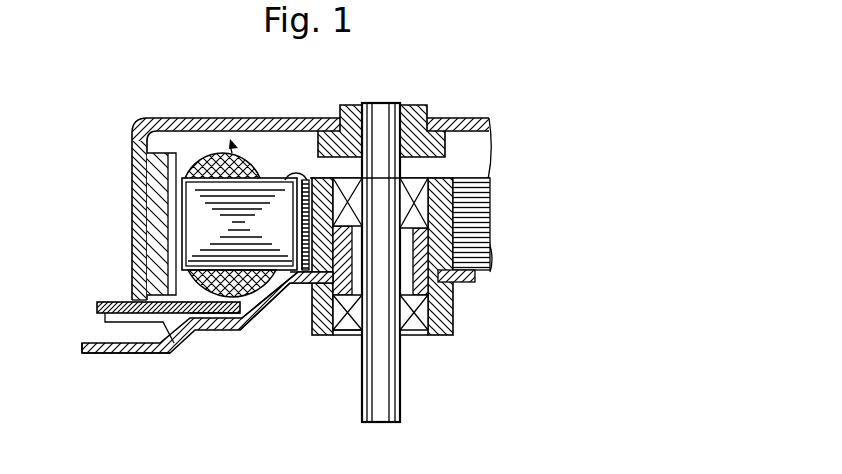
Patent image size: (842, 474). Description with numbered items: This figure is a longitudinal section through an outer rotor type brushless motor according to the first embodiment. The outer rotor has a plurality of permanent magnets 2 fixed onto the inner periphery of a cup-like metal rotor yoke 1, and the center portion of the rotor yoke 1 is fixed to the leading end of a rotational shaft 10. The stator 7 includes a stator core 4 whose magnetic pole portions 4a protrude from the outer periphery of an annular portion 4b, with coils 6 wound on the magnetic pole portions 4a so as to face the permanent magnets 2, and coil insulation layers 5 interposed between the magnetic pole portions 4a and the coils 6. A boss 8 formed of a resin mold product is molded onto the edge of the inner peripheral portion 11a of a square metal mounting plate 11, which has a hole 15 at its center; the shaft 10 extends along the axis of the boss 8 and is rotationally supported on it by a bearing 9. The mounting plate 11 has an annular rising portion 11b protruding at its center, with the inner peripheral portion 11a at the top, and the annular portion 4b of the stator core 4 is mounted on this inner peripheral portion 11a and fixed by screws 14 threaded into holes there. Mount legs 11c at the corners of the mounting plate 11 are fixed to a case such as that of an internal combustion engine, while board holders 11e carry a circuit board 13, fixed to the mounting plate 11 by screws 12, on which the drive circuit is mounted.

The rotor yoke 1 is at (132, 153).
The permanent magnets 2 is at (155, 249).
The stator core 4 is at (206, 218).
The magnetic pole portions 4a is at (192, 200).
The annular portion 4b is at (290, 200).
The coil insulation layers 5 is at (203, 167).
The coils 6 is at (222, 165).
The stator 7 is at (236, 146).
The boss 8 is at (455, 315).
The bearing 9 is at (415, 188).
The rotational shaft 10 is at (378, 125).
The mounting plate 11 is at (203, 334).
The inner peripheral portion 11a is at (316, 270).
The rising portion 11b is at (272, 303).
The mount legs 11c is at (118, 354).
The board holders 11e is at (108, 322).
The screws 12 is at (105, 303).
The circuit board 13 is at (236, 330).
The screws 14 is at (303, 178).
The hole 15 is at (343, 322).